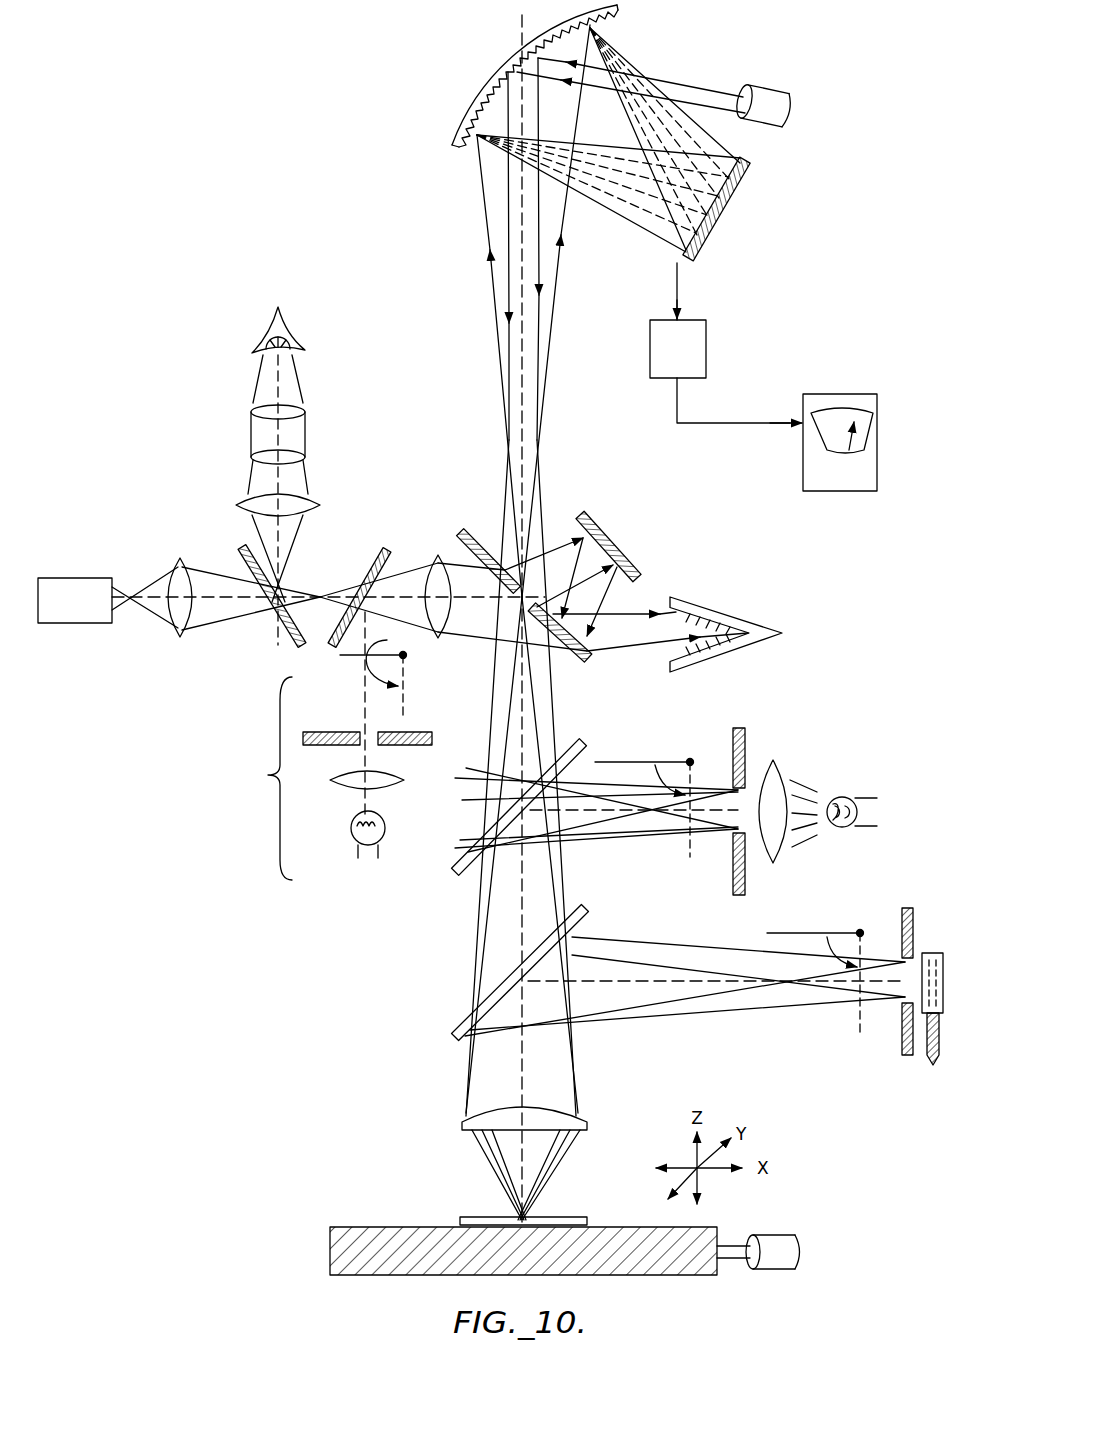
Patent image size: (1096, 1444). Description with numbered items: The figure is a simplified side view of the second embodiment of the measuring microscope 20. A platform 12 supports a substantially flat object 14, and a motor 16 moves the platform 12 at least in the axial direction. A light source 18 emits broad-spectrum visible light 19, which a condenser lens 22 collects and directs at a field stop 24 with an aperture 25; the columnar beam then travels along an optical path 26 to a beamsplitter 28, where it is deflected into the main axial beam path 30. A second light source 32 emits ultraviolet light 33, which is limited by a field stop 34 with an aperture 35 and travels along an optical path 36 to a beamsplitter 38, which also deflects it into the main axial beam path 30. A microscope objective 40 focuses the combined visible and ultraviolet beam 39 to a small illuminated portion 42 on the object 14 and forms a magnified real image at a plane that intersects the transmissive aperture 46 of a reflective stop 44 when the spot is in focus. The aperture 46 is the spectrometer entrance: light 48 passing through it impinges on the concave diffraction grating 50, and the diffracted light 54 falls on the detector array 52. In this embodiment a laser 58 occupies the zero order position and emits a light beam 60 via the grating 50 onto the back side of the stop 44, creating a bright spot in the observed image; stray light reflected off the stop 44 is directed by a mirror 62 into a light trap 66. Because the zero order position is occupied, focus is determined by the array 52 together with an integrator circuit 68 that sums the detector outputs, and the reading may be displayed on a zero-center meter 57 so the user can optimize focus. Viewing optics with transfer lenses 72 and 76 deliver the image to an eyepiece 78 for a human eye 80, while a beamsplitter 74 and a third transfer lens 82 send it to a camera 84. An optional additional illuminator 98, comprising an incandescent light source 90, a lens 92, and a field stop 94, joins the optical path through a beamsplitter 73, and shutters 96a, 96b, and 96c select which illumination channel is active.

The measuring microscope 20 is at (266, 60).
The diffraction grating 50 is at (532, 35).
The laser 58 is at (758, 88).
The detector array 52 is at (748, 160).
The diffracted light 54 is at (673, 205).
The light beam 60 is at (537, 240).
The main axial beam path 30 is at (522, 283).
The light 48 is at (548, 362).
The combined visible and ultraviolet light beam 39 is at (578, 1085).
The integrator circuit 68 is at (706, 348).
The zero-center meter 57 is at (856, 394).
The human eye 80 is at (268, 330).
The eyepiece 78 is at (251, 435).
The transfer lens 76 is at (245, 500).
The camera 84 is at (60, 578).
The third transfer lens 82 is at (175, 635).
The beamsplitter 74 is at (290, 642).
The beamsplitter 73 is at (372, 560).
The transfer lens 72 is at (433, 558).
The transmissive aperture 46 is at (540, 593).
The mirror 62 is at (615, 542).
The reflective stop 44 is at (585, 660).
The light trap 66 is at (722, 608).
The shutter 96c is at (405, 656).
The additional illuminator 98 is at (260, 778).
The field stop 94 is at (330, 746).
The lens 92 is at (340, 787).
The incandescent light source 90 is at (352, 832).
The beamsplitter 28 is at (458, 858).
The optical path 26 is at (662, 812).
The shutter 96b is at (632, 762).
The field stop 24 is at (736, 727).
The aperture 25 is at (750, 832).
The condenser lens 22 is at (778, 762).
The visible light 19 is at (803, 782).
The light source 18 is at (850, 797).
The beamsplitter 38 is at (463, 1025).
The ultraviolet light 33 is at (750, 1012).
The optical path 36 is at (653, 985).
The shutter 96a is at (795, 933).
The field stop 34 is at (908, 906).
The second light source 32 is at (930, 953).
The aperture 35 is at (897, 1005).
The microscope objective 40 is at (460, 1125).
The illuminated portion 42 is at (540, 1212).
The object 14 is at (475, 1217).
The platform 12 is at (385, 1227).
The motor 16 is at (770, 1235).